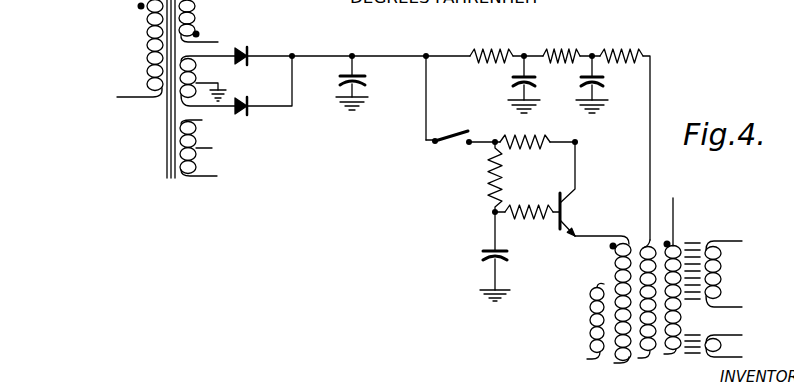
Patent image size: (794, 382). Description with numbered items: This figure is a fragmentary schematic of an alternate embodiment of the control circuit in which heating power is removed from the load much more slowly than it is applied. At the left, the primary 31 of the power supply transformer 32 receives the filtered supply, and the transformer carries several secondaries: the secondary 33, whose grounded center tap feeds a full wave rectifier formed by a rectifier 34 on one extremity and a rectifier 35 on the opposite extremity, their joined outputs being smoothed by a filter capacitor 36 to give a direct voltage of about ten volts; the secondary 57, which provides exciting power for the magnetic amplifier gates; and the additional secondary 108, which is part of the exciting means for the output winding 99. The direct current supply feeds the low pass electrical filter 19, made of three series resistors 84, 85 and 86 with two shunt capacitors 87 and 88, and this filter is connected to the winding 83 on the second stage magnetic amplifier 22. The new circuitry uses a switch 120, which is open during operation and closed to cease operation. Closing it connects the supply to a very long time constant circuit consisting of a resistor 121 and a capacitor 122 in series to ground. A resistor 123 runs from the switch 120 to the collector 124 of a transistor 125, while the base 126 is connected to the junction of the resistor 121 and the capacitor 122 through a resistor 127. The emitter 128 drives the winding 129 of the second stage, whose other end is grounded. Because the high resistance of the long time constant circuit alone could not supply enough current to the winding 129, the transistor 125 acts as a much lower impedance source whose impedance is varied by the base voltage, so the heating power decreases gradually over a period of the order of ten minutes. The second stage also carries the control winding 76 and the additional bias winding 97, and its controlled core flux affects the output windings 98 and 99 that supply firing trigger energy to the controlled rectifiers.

The low pass electrical filter 19 is at (575, 125).
The second stage magnetic amplifier 22 is at (710, 233).
The primary 31 is at (147, 53).
The power supply transformer 32 is at (158, 125).
The secondary 33 is at (196, 68).
The rectifier 34 is at (248, 50).
The rectifier 35 is at (249, 112).
The filter capacitor 36 is at (366, 80).
The secondary 57 is at (196, 135).
The control winding 76 is at (590, 305).
The winding 83 is at (652, 239).
The resistor 84 is at (494, 50).
The resistor 85 is at (570, 50).
The resistor 86 is at (628, 50).
The capacitor 87 is at (536, 84).
The capacitor 88 is at (604, 84).
The additional bias winding 97 is at (680, 243).
The output winding 98 is at (721, 277).
The output winding 99 is at (721, 345).
The additional secondary 108 is at (195, 21).
The switch 120 is at (468, 128).
The resistor 121 is at (489, 172).
The capacitor 122 is at (478, 256).
The resistor 123 is at (525, 136).
The collector 124 is at (575, 192).
The transistor 125 is at (587, 196).
The base 126 is at (561, 192).
The resistor 127 is at (540, 208).
The emitter 128 is at (569, 233).
The winding 129 is at (612, 265).